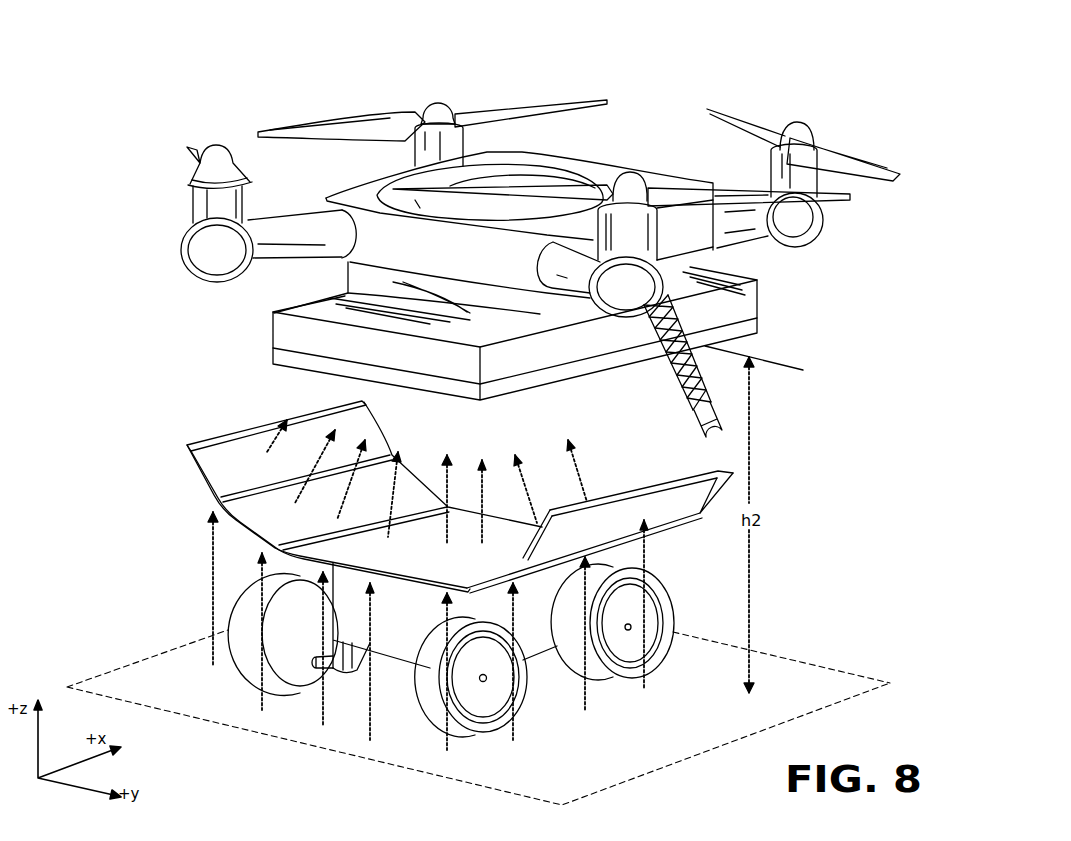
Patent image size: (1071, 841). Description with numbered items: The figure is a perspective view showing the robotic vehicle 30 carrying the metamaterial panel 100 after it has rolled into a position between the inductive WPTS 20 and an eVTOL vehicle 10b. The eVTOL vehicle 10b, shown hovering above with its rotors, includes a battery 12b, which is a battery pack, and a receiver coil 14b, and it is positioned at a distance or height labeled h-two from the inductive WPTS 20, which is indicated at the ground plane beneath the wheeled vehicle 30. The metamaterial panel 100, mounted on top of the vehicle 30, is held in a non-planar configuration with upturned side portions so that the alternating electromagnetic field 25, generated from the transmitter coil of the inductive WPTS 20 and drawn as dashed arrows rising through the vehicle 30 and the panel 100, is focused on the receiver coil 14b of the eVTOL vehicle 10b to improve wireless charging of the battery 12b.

The eVTOL vehicle 10b is at (772, 92).
The battery 12b is at (738, 300).
The receiver coil 14b is at (742, 340).
The metamaterial panel 100 is at (227, 417).
The vehicle 30 is at (191, 533).
The alternating electromagnetic field 25 is at (605, 468).
The inductive WPTS 20 is at (170, 660).